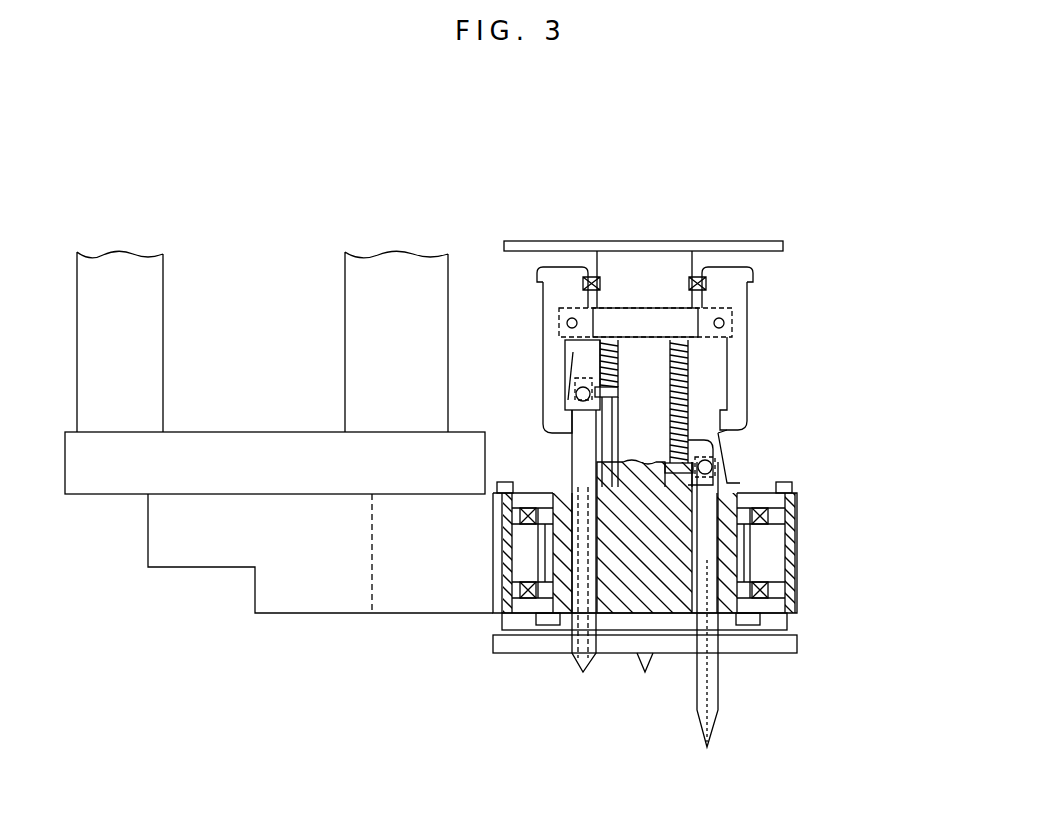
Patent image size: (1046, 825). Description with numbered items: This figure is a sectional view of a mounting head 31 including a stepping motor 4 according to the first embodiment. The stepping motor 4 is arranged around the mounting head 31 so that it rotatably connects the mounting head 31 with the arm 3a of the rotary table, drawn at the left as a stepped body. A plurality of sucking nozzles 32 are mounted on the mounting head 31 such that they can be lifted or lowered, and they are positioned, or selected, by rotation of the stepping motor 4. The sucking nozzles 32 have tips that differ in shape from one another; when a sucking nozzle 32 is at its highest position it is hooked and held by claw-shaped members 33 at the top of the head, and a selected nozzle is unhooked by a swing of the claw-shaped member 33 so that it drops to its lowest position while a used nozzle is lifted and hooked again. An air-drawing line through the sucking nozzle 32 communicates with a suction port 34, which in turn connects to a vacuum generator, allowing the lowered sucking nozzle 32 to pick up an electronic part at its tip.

The arm 3a is at (405, 595).
The mounting head 31 is at (795, 396).
The sucking nozzles 32 is at (697, 698).
The claw-shaped members 33 is at (565, 270).
The suction port 34 is at (725, 614).
The stepping motor 4 is at (820, 503).